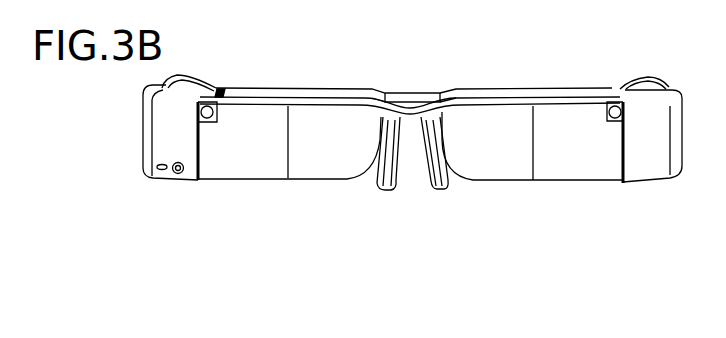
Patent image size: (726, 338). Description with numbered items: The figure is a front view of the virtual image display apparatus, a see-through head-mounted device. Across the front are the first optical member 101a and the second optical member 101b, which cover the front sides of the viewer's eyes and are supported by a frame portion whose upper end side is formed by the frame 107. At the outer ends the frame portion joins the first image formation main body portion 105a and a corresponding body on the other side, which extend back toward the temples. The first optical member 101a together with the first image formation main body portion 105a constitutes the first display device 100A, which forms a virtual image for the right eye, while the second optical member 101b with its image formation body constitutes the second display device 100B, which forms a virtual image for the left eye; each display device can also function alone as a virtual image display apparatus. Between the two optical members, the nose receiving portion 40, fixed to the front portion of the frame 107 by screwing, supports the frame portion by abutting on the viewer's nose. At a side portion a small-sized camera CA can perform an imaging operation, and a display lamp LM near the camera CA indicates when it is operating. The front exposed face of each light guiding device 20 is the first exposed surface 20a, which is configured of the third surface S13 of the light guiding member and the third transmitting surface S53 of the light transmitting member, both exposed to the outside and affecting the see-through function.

The first display device 100A is at (312, 88).
The second display device 100B is at (587, 88).
The first optical member 101a is at (267, 122).
The second optical member 101b is at (498, 123).
The light guiding device 20 is at (412, 128).
The first exposed surface 20a is at (382, 260).
The third surface S13 is at (248, 163).
The third transmitting surface S53 is at (317, 165).
The nose receiving portion 40 is at (430, 176).
The camera CA is at (178, 175).
The display lamp LM is at (162, 172).
The frame 107 is at (407, 6).
The first image formation main body portion 105a is at (667, 6).